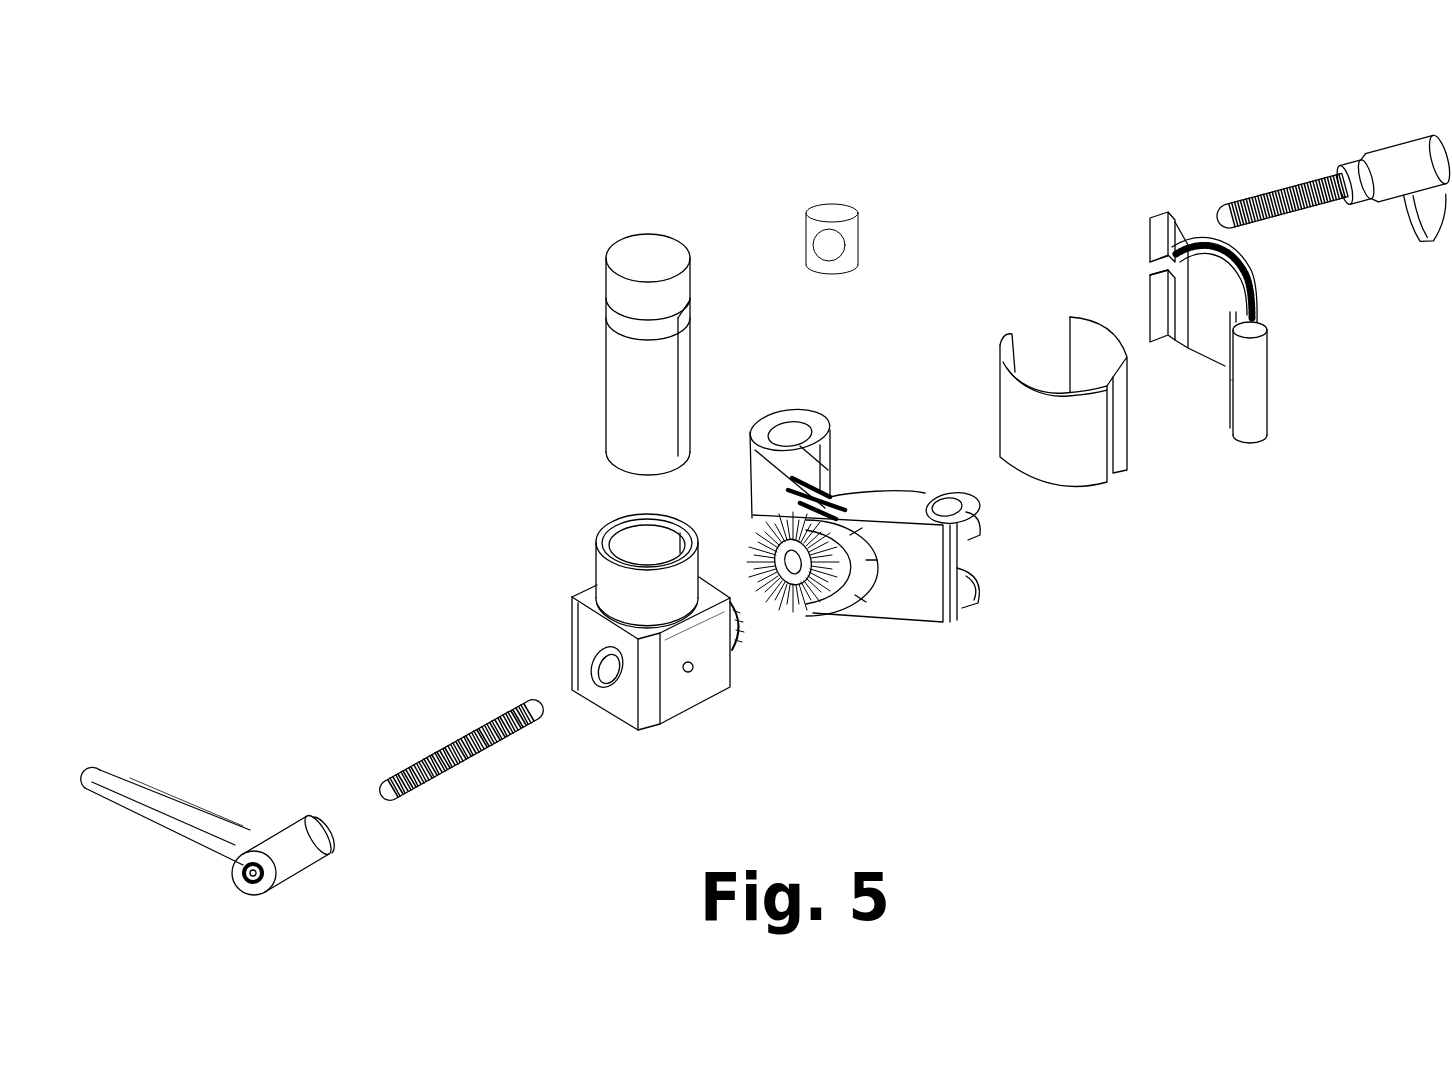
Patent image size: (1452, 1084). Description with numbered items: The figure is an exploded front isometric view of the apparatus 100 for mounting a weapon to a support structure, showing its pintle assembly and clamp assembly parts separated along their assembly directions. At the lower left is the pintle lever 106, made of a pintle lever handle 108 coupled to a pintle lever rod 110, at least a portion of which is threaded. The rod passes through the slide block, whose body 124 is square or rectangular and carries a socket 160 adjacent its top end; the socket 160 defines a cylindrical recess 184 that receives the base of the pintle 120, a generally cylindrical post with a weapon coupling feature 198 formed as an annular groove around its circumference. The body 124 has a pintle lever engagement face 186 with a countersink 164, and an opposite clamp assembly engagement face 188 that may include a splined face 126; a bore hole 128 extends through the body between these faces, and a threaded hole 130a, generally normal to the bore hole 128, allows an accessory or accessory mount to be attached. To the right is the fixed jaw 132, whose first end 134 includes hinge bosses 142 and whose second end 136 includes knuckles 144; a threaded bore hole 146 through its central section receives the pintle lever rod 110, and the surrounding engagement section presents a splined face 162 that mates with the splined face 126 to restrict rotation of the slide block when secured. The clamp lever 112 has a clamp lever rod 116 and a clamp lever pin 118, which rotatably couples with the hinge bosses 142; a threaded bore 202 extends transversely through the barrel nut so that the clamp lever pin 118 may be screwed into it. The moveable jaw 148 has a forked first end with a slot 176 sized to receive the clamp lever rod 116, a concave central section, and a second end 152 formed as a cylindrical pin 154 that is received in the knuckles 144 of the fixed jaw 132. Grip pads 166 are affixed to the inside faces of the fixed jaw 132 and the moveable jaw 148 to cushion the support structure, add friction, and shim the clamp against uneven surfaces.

The apparatus 100 is at (388, 135).
The pintle lever 106 is at (289, 835).
The pintle lever handle 108 is at (193, 810).
The pintle lever rod 110 is at (447, 780).
The clamp lever 112 is at (1402, 150).
The clamp lever rod 116 is at (1305, 210).
The clamp lever pin 118 is at (862, 224).
The pintle 120 is at (640, 250).
The body 124 is at (655, 684).
The splined face 126 is at (745, 635).
The bore hole 128 is at (590, 652).
The threaded hole 130a is at (704, 680).
The fixed jaw 132 is at (897, 585).
The first end 134 is at (798, 494).
The second end 136 is at (938, 586).
The hinge boss 142 is at (827, 423).
The knuckle 144 is at (985, 520).
The bore hole 146 is at (770, 543).
The moveable jaw 148 is at (1210, 294).
The second end 152 is at (1300, 370).
The pin 154 is at (1262, 420).
The socket 160 is at (605, 570).
The splined face 162 is at (815, 613).
The countersink 164 is at (593, 674).
The grip pads 166 is at (1005, 390).
The slot 176 is at (1097, 241).
The cylindrical recess 184 is at (629, 534).
The pintle lever engagement face 186 is at (630, 697).
The clamp assembly engagement face 188 is at (740, 630).
The weapon coupling feature 198 is at (613, 310).
The threaded bore 202 is at (806, 243).